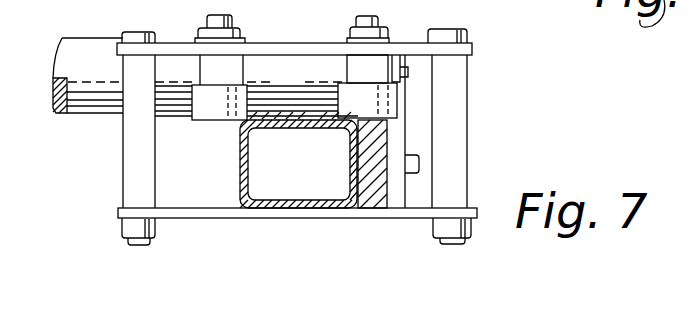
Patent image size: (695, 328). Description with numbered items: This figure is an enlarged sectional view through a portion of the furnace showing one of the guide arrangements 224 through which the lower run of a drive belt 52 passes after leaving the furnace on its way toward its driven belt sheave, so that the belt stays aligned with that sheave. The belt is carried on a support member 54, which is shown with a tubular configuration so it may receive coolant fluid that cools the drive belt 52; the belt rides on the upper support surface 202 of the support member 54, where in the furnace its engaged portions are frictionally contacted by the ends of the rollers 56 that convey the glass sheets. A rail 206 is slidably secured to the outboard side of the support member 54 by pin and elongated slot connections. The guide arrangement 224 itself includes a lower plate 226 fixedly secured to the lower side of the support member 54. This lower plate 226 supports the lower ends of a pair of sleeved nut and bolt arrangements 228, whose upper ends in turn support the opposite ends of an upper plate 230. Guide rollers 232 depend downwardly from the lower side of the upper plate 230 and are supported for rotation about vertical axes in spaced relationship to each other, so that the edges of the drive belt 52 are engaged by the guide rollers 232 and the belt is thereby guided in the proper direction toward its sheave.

The rollers 56 is at (84, 64).
The drive belts 52 is at (265, 117).
The upper plate 230 is at (262, 53).
The guide arrangement 224 is at (413, 33).
The sleeved nut and bolt arrangements 228 is at (133, 123).
The lower plate 226 is at (273, 217).
The support member 54 is at (240, 168).
The upper support surface 202 is at (312, 116).
The rail 206 is at (377, 197).
The guide rollers 232 is at (232, 108).